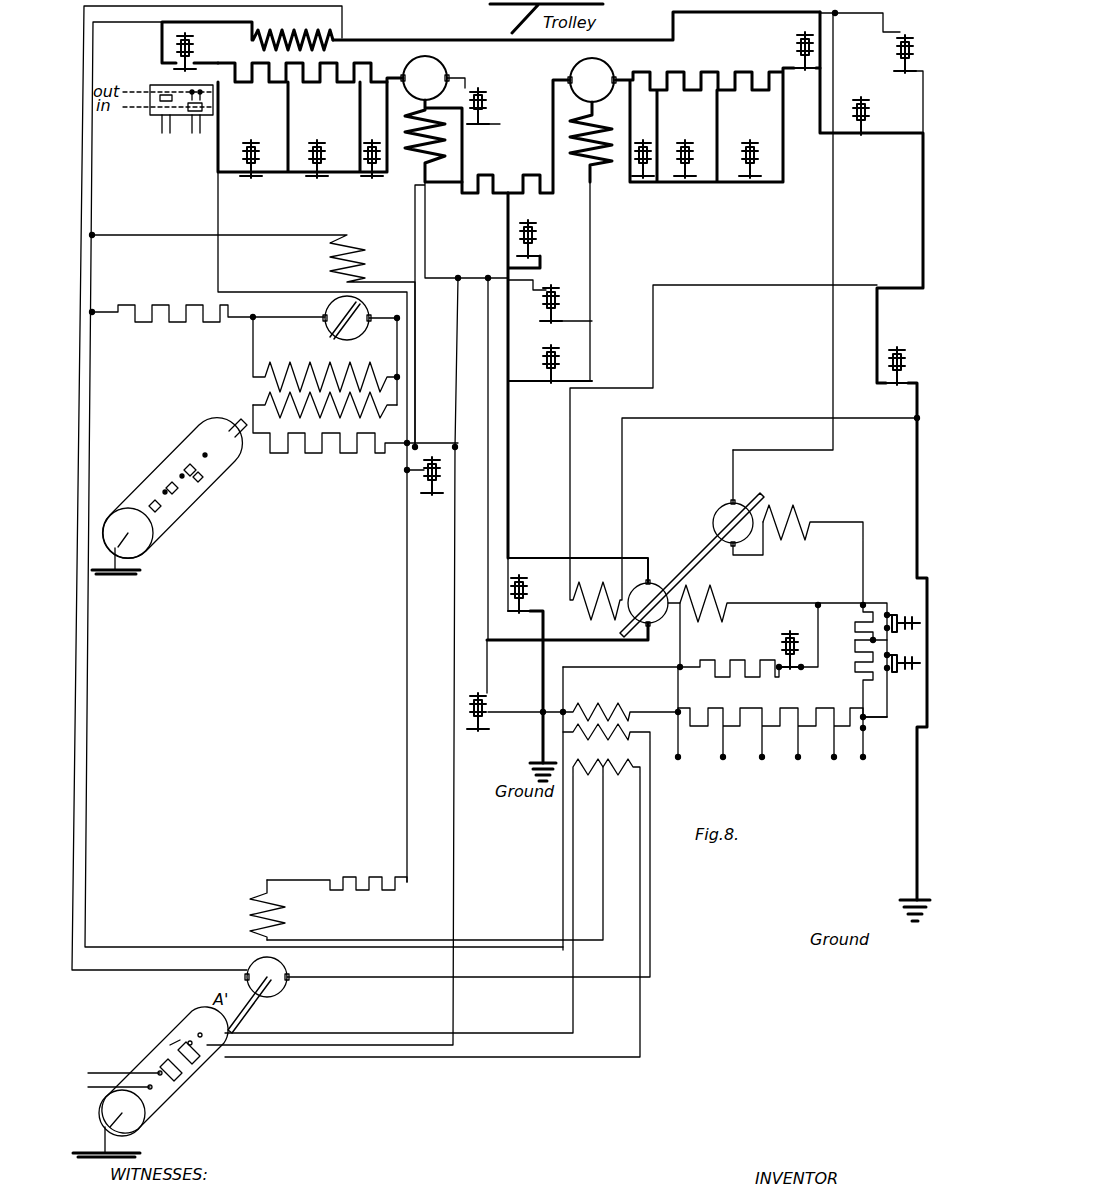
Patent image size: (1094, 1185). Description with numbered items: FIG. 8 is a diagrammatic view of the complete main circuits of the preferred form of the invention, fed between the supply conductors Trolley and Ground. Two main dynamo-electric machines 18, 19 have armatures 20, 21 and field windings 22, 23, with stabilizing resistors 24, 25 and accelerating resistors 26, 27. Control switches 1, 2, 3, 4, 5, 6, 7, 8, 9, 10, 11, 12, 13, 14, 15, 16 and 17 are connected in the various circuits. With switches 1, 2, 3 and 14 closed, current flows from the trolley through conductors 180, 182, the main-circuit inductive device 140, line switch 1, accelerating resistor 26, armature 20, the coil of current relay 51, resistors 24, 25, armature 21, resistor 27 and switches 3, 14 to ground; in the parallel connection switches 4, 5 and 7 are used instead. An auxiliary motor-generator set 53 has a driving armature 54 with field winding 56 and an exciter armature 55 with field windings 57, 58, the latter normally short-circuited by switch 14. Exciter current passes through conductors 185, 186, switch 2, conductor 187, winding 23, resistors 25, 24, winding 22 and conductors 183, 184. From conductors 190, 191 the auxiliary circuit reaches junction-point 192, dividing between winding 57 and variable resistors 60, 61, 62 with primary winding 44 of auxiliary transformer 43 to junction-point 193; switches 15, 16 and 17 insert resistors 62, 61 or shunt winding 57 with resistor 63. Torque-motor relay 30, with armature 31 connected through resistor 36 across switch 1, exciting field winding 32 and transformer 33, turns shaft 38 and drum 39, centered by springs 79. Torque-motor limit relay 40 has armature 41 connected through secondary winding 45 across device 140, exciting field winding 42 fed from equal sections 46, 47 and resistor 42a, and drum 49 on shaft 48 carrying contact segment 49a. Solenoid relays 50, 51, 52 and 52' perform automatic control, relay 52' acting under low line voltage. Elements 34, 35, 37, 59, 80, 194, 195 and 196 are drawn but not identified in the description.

The line switch 1 is at (142, 81).
The switch 2 is at (550, 364).
The switch 3 is at (868, 127).
The switch 4 is at (529, 375).
The switch 5 is at (528, 669).
The switch 6 is at (550, 301).
The switch 7 is at (792, 51).
The switch 8 is at (251, 171).
The switch 9 is at (317, 171).
The switch 10 is at (371, 170).
The switch 11 is at (645, 177).
The switch 12 is at (685, 177).
The switch 13 is at (753, 177).
The switch 14 is at (888, 385).
The switch 15 is at (898, 683).
The switch 16 is at (900, 612).
The switch 17 is at (799, 650).
The main dynamo-electric machine 18 is at (482, 68).
The main dynamo-electric machine 19 is at (562, 68).
The armature 20 is at (425, 78).
The armature 21 is at (592, 80).
The field winding 22 is at (433, 144).
The field winding 23 is at (587, 145).
The stabilizing resistor 24 is at (485, 176).
The stabilizing resistor 25 is at (539, 136).
The accelerating resistor 26 is at (310, 117).
The accelerating resistor 27 is at (718, 116).
The torque-motor-relay device 30 is at (310, 313).
The relay armature 31 is at (382, 350).
The exciting field winding 32 is at (253, 341).
The transformer 33 is at (225, 396).
The resistance 34 is at (325, 367).
The contact segment 35 is at (382, 430).
The resistor 36 is at (208, 326).
The contact segment 37 is at (355, 440).
The shaft 38 is at (328, 323).
The small drum or cylinder 39 is at (222, 477).
The torque-motor limit relay 40 is at (192, 935).
The commutator-type armature 41 is at (282, 966).
The exciting field winding 42 is at (283, 912).
The resistor 42a is at (337, 870).
The auxiliary transformer 43 is at (663, 731).
The primary winding 44 is at (620, 700).
The secondary winding 45 is at (468, 848).
The transformer section 46 is at (414, 896).
The transformer section 47 is at (432, 908).
The operating shaft 48 is at (251, 1005).
The small drum or cylinder 49 is at (190, 1078).
The contact segment 49a is at (161, 1031).
The relay device 50 is at (424, 489).
The current relay 51 is at (489, 106).
The relay device 52 is at (515, 686).
The relay device 52' is at (889, 84).
The auxiliary motor-generator set 53 is at (685, 533).
The driving armature 54 is at (738, 502).
The exciter armature 55 is at (654, 623).
The field winding 56 is at (813, 543).
The exciter field winding 57 is at (783, 649).
The field winding 58 is at (745, 452).
The relay armature 59 is at (692, 565).
The variable resistor 60 is at (782, 721).
The variable resistor 61 is at (855, 636).
The variable resistor 62 is at (855, 664).
The resistor 63 is at (671, 657).
The centering springs 79 is at (116, 566).
The ground connection 80 is at (146, 1140).
The main-circuit inductive device 140 is at (247, 36).
The conductor 180 is at (544, 18).
The conductor 182 is at (576, 26).
The conductor 183 is at (461, 314).
The conductor 184 is at (348, 661).
The conductor 185 is at (567, 589).
The conductor 186 is at (516, 459).
The conductor 187 is at (592, 245).
The conductor 190 is at (806, 197).
The conductor 191 is at (832, 183).
The junction-point 192 is at (866, 603).
The junction-point 193 is at (566, 710).
The switch 194 is at (150, 51).
The conductor 195 is at (312, 482).
The conductor 196 is at (437, 556).